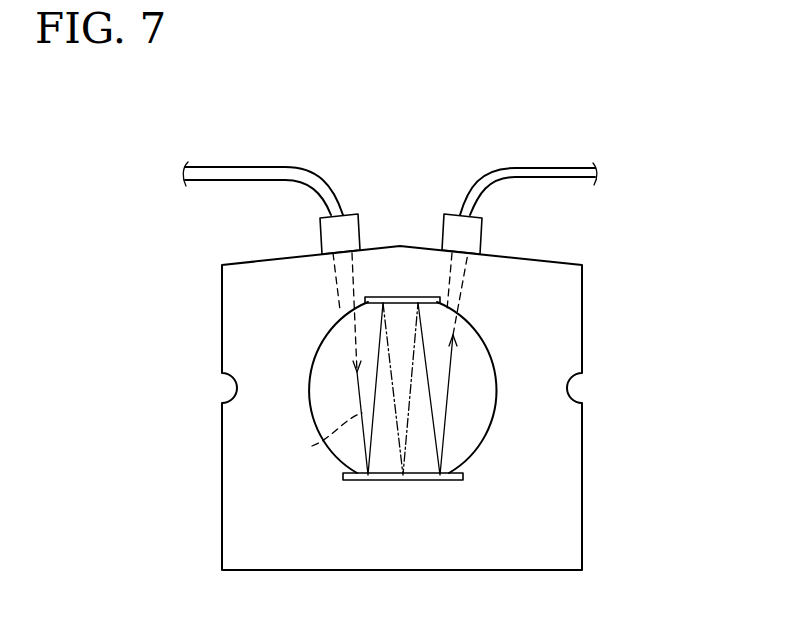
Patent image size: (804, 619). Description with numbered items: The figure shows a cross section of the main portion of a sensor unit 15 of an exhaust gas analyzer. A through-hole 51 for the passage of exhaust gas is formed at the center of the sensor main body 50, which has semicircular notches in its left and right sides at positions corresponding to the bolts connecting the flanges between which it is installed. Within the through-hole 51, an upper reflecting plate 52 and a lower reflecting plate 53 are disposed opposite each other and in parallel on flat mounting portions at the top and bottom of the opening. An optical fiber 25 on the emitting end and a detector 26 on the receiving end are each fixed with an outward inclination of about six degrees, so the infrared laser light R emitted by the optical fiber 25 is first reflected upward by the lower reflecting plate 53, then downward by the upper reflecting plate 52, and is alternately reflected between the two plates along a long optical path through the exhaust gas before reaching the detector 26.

The sensor unit 15 is at (666, 271).
The optical fiber 25 is at (247, 167).
The detector 26 is at (484, 232).
The sensor main body 50 is at (459, 382).
The through-hole 51 is at (478, 429).
The upper reflecting plate 52 is at (401, 297).
The lower reflecting plate 53 is at (400, 481).
The infrared laser light R is at (312, 446).